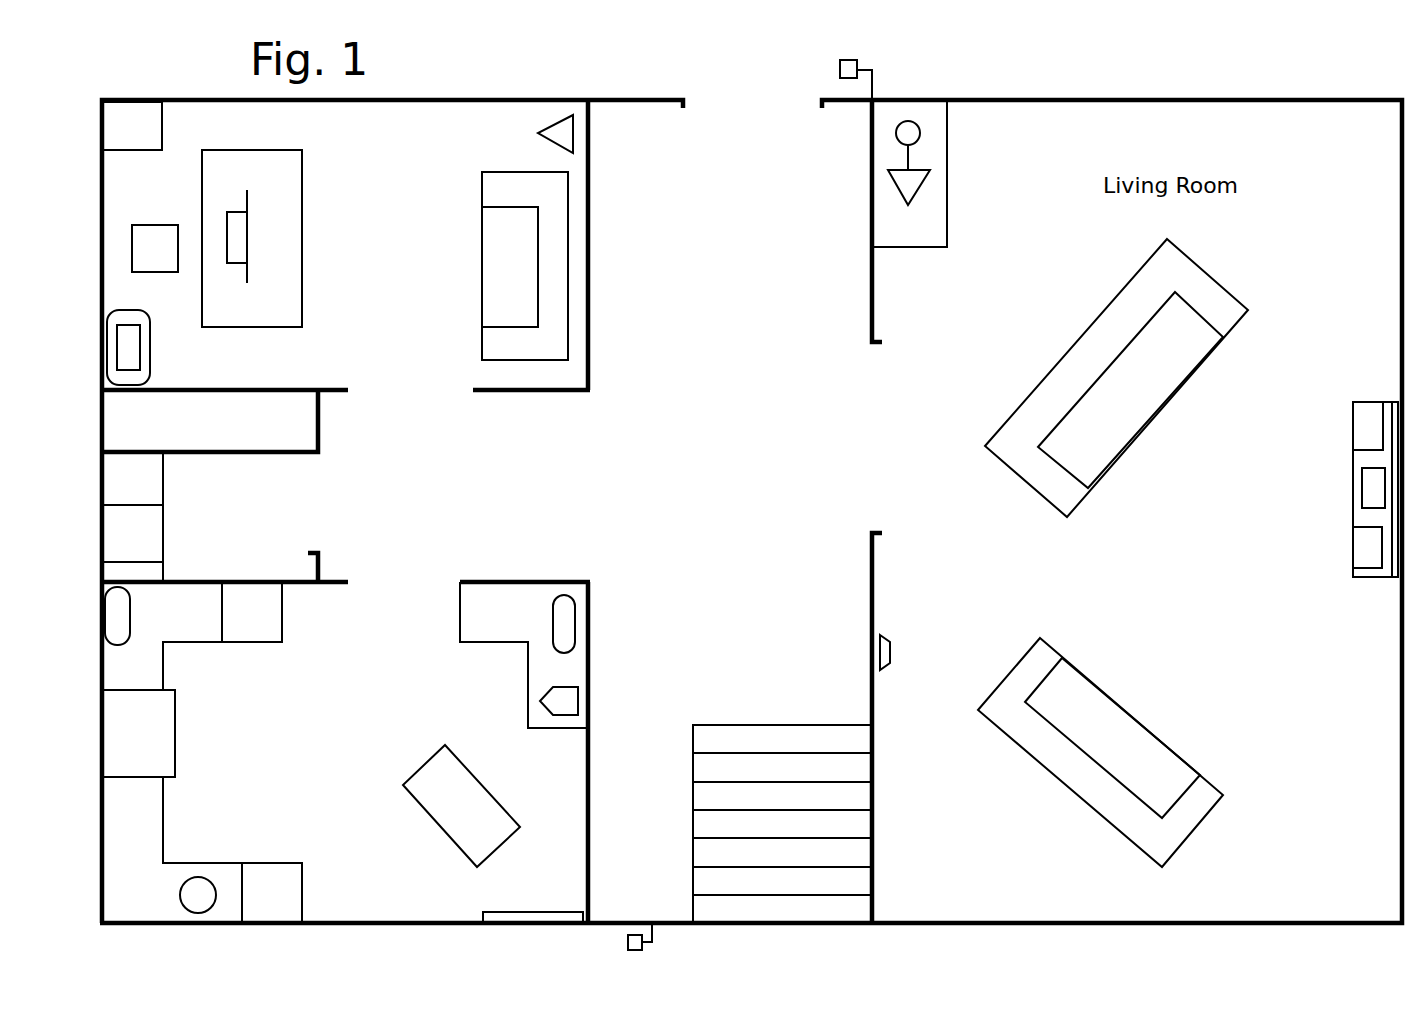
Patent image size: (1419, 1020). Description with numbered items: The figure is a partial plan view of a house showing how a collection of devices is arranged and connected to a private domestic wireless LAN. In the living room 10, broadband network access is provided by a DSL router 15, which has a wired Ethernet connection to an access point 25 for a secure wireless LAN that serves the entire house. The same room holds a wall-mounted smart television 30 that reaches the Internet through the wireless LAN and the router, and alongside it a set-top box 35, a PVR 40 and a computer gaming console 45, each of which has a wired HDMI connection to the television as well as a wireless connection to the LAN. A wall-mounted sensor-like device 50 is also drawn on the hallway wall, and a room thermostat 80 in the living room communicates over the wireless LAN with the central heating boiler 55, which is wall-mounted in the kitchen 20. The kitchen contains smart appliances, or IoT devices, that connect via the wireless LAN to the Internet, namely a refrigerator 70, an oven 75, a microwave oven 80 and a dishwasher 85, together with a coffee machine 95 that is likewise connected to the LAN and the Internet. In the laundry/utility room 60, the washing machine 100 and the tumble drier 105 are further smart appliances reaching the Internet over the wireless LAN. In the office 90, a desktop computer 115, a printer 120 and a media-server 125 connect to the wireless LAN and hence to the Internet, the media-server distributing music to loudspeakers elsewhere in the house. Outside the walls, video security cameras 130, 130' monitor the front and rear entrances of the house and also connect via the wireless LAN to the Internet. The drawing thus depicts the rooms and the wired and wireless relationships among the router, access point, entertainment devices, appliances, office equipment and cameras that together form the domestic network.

The living room 10 is at (1258, 142).
The DSL router 15 is at (915, 128).
The kitchen 20 is at (555, 790).
The access point 25 is at (918, 185).
The smart television 30 is at (1396, 562).
The set-top box 35 is at (1368, 542).
The PVR 40 is at (1365, 423).
The computer gaming console 45 is at (1370, 480).
The wall sensor 50 is at (884, 652).
The central heating boiler 55 is at (122, 615).
The laundry/utility room 60 is at (290, 533).
The refrigerator 70 is at (152, 735).
The oven 75 is at (268, 615).
The microwave oven 80 is at (558, 632).
The dishwasher 85 is at (272, 880).
The office 90 is at (423, 362).
The coffee machine 95 is at (560, 700).
The washing machine 100 is at (140, 540).
The tumble drier 105 is at (135, 485).
The desktop computer 115 is at (247, 206).
The printer 120 is at (143, 355).
The media-server 125 is at (556, 140).
The video security camera 130 is at (810, 80).
The video security camera 130' is at (590, 942).